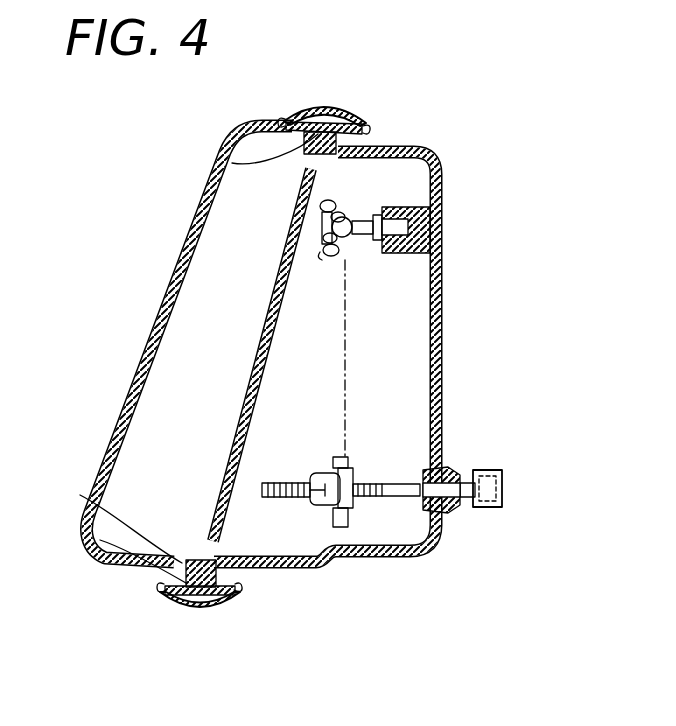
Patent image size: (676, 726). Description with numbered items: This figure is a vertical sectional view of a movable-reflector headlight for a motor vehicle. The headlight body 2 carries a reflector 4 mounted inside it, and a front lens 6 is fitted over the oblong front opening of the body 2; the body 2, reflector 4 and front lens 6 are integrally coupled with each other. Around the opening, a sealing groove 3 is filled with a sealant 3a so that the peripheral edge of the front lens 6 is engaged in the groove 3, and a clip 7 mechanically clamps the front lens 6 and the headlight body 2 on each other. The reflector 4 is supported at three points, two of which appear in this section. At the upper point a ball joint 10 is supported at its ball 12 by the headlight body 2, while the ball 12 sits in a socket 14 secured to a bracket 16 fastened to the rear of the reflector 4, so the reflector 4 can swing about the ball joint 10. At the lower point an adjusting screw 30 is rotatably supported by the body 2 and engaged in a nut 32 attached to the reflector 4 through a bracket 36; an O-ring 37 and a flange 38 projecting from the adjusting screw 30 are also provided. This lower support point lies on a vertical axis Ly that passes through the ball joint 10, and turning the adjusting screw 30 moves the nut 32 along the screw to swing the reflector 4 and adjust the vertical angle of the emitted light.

The headlight body 2 is at (444, 185).
The sealing groove 3 is at (320, 104).
The sealant 3a is at (232, 164).
The reflector 4 is at (250, 393).
The front lens 6 is at (146, 317).
The clip 7 is at (341, 108).
The ball joint 10 is at (368, 193).
The ball 12 is at (344, 242).
The socket 14 is at (320, 254).
The bracket 16 is at (336, 200).
The adjusting screw 30 is at (395, 499).
The nut 32 is at (322, 522).
The bracket 36 is at (343, 530).
The O-ring 37 is at (444, 515).
The flange 38 is at (455, 468).
The vertical axis Ly is at (444, 322).